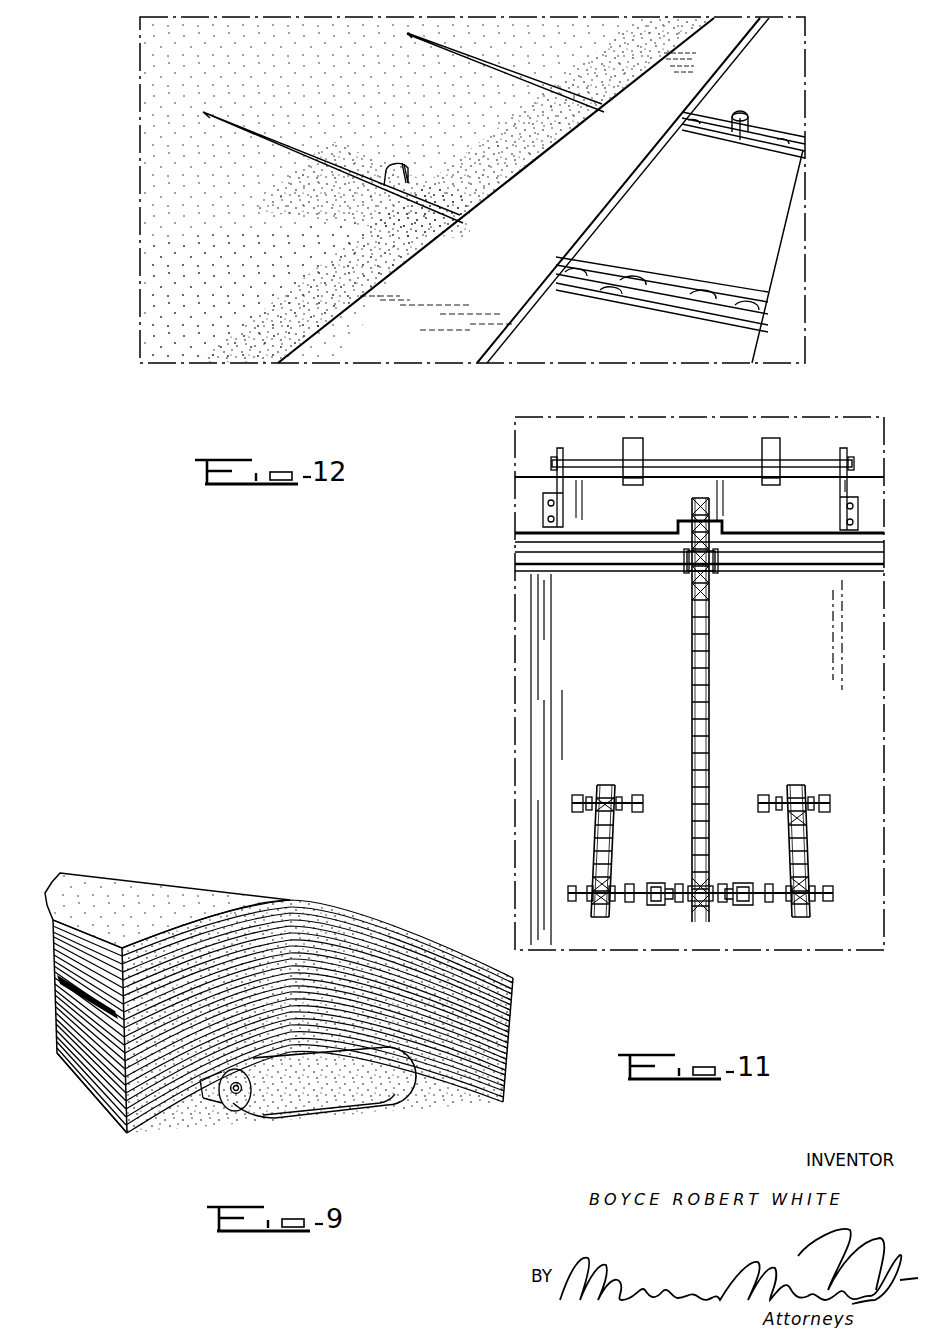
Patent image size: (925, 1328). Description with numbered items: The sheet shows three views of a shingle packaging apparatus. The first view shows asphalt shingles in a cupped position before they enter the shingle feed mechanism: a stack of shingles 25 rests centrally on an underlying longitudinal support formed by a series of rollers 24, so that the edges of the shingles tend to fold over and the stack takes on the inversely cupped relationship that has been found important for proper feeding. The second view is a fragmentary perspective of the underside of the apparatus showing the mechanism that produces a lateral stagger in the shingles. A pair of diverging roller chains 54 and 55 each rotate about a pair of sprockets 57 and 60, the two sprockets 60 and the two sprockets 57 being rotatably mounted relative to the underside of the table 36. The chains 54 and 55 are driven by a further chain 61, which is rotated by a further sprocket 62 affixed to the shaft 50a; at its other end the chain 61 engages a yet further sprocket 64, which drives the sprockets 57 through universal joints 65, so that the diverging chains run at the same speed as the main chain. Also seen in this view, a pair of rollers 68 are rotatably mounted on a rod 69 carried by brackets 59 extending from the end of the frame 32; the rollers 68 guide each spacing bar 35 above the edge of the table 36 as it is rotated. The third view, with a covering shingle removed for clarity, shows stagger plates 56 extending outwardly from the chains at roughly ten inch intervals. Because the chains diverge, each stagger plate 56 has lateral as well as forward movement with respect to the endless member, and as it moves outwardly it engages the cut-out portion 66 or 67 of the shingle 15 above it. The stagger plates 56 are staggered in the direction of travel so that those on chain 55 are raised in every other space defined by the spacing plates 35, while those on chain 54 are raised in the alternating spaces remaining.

In FIG. 12, the shingle 15 is at (262, 264).
In FIG. 12, the spacing plate 35 is at (496, 282).
In FIG. 12, the table 36 is at (730, 238).
In FIG. 11, the table 36 is at (640, 649).
In FIG. 12, the diverging roller chain 54 is at (760, 124).
In FIG. 11, the diverging roller chain 54 is at (792, 856).
In FIG. 12, the diverging roller chain 55 is at (632, 290).
In FIG. 11, the diverging roller chain 55 is at (610, 851).
In FIG. 12, the stagger plate 56 is at (736, 135).
In FIG. 12, the cut-out portion 66 is at (439, 199).
In FIG. 12, the cut-out portion 67 is at (555, 90).
In FIG. 11, the frame 32 is at (662, 514).
In FIG. 11, the shaft 50a is at (526, 570).
In FIG. 11, the bracket 59 is at (840, 508).
In FIG. 11, the sprocket 60 is at (616, 796).
In FIG. 11, the further chain 61 is at (711, 720).
In FIG. 11, the further sprocket 62 is at (710, 545).
In FIG. 11, the yet further sprocket 64 is at (711, 887).
In FIG. 11, the universal joint 65 is at (656, 905).
In FIG. 11, the roller 68 is at (620, 444).
In FIG. 11, the rod 69 is at (691, 460).
In FIG. 11, the sprocket 57 is at (589, 906).
In FIG. 9, the roller 24 is at (348, 1081).
In FIG. 9, the stack of shingles 25 is at (478, 1086).